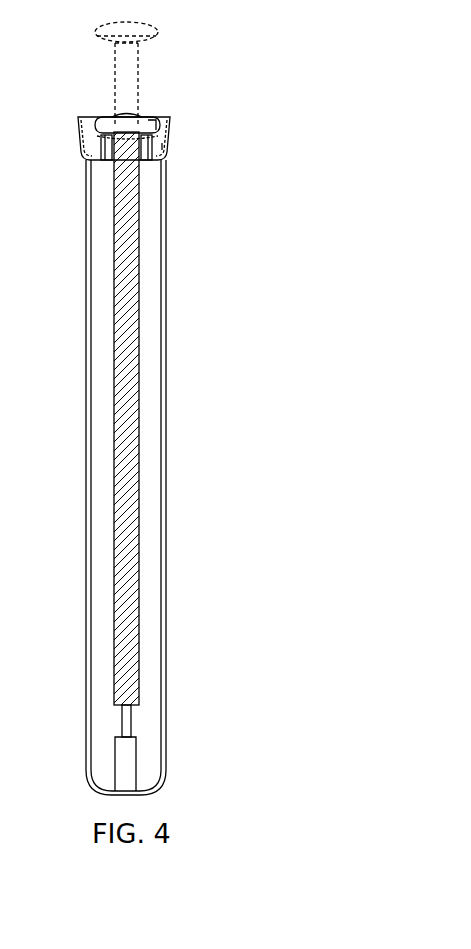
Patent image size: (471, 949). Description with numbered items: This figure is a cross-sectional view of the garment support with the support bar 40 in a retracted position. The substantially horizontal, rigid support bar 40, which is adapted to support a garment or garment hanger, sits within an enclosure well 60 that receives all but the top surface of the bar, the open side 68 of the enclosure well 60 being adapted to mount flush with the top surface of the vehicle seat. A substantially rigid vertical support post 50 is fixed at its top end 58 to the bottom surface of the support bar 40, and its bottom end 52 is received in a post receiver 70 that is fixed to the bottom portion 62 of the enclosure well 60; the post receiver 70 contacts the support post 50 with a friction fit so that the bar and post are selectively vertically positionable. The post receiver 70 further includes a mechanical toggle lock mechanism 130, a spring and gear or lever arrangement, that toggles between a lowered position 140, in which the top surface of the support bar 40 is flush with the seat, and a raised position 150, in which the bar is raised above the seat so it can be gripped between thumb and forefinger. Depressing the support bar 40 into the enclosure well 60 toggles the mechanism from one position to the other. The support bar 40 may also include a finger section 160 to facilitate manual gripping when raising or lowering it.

The support bar 40 is at (106, 118).
The support post 50 is at (123, 448).
The bottom end 52 is at (125, 683).
The top end 58 is at (130, 117).
The enclosure well 60 is at (78, 130).
The bottom portion 62 is at (98, 163).
The open side 68 is at (80, 118).
The post receiver 70 is at (86, 333).
The toggle lock mechanism 130 is at (132, 745).
The lowered position 140 is at (162, 138).
The raised position 150 is at (151, 77).
The finger section 160 is at (143, 118).